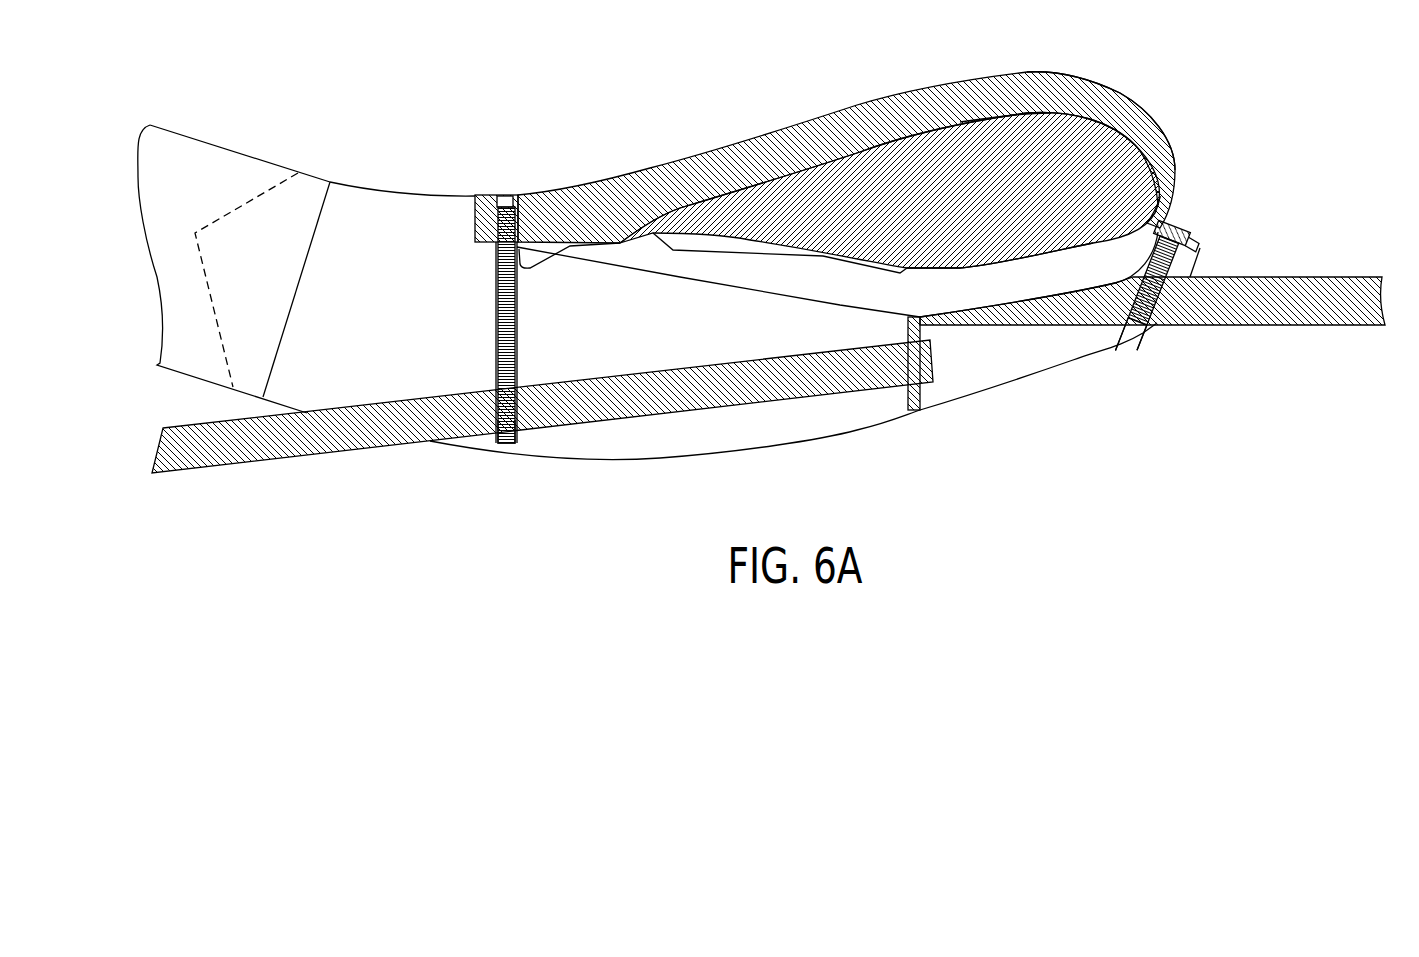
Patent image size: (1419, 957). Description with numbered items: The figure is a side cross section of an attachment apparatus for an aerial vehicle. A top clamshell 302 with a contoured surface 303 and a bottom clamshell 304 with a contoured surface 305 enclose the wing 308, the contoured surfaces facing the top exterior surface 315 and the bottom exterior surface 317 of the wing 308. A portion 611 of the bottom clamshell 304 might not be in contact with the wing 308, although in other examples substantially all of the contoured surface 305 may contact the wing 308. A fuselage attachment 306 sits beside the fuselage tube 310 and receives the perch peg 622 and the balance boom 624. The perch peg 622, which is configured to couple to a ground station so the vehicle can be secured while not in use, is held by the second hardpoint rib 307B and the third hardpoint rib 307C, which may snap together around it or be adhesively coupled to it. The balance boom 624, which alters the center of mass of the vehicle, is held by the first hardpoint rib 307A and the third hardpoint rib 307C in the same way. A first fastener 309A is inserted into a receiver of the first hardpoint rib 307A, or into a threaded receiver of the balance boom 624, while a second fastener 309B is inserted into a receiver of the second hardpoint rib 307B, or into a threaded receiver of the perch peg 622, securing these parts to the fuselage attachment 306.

The top clamshell 302 is at (870, 110).
The contoured surface 303 is at (907, 140).
The bottom clamshell 304 is at (1010, 267).
The contoured surface 305 is at (1075, 230).
The fuselage attachment 306 is at (368, 198).
The first hardpoint rib 307A is at (1127, 340).
The second hardpoint rib 307B is at (510, 445).
The third hardpoint rib 307C is at (912, 411).
The wing 308 is at (1018, 140).
The first fastener 309A is at (1180, 227).
The second fastener 309B is at (505, 192).
The fuselage tube 310 is at (225, 167).
The top exterior surface 315 is at (1087, 103).
The bottom exterior surface 317 is at (823, 257).
The portion of the bottom clamshell 611 is at (758, 253).
The perch peg 622 is at (373, 452).
The balance boom 624 is at (1272, 327).